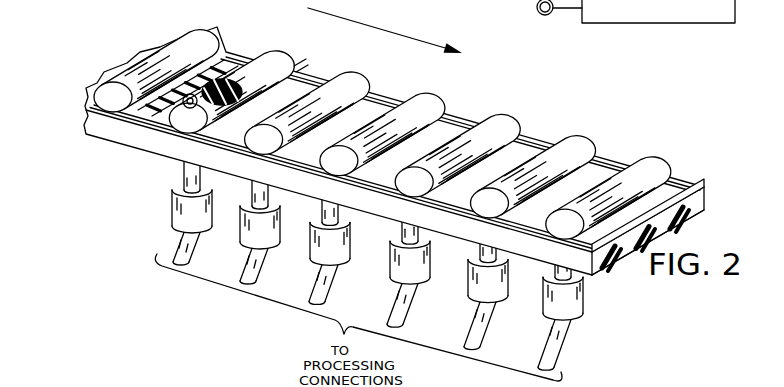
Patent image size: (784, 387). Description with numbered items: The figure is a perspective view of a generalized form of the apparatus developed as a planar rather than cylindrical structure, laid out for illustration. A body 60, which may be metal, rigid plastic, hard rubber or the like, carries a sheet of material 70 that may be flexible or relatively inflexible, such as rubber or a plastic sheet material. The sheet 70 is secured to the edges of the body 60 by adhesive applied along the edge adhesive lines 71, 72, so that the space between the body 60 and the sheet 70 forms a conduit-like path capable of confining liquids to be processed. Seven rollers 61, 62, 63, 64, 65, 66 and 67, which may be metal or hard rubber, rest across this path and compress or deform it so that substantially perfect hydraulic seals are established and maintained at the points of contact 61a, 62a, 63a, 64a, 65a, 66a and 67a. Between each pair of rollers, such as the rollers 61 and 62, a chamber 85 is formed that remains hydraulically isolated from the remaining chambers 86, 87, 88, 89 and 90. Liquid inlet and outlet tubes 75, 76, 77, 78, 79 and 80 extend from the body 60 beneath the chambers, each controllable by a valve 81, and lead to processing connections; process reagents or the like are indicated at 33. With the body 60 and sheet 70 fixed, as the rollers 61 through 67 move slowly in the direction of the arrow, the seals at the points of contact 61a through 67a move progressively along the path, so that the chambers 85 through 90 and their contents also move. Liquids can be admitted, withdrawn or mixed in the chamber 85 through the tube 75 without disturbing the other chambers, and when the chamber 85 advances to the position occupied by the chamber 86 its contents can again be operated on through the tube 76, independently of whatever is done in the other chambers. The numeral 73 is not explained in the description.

The process reagents supply 33 is at (737, 14).
The body 60 is at (708, 200).
The roller 61 is at (201, 34).
The point of contact 61a is at (86, 108).
The roller 62 is at (278, 58).
The point of contact 62a is at (308, 69).
The roller 63 is at (358, 82).
The point of contact 63a is at (254, 184).
The roller 64 is at (431, 101).
The point of contact 64a is at (323, 205).
The roller 65 is at (515, 117).
The point of contact 65a is at (402, 226).
The roller 66 is at (587, 143).
The point of contact 66a is at (480, 242).
The roller 67 is at (661, 164).
The point of contact 67a is at (555, 268).
The sheet of material 70 is at (678, 216).
The edge adhesive line 71 is at (592, 272).
The edge adhesive line 72 is at (702, 184).
The end hatched band 73 is at (629, 252).
The liquid inlet and outlet tube 75 is at (183, 172).
The liquid inlet and outlet tube 76 is at (242, 224).
The liquid inlet and outlet tube 77 is at (311, 238).
The liquid inlet and outlet tube 78 is at (391, 264).
The liquid inlet and outlet tube 79 is at (469, 282).
The liquid inlet and outlet tube 80 is at (544, 300).
The valve 81 is at (174, 214).
The chamber 85 is at (224, 60).
The chamber 86 is at (178, 126).
The chamber 87 is at (375, 104).
The chamber 88 is at (457, 131).
The chamber 89 is at (530, 151).
The chamber 90 is at (602, 174).